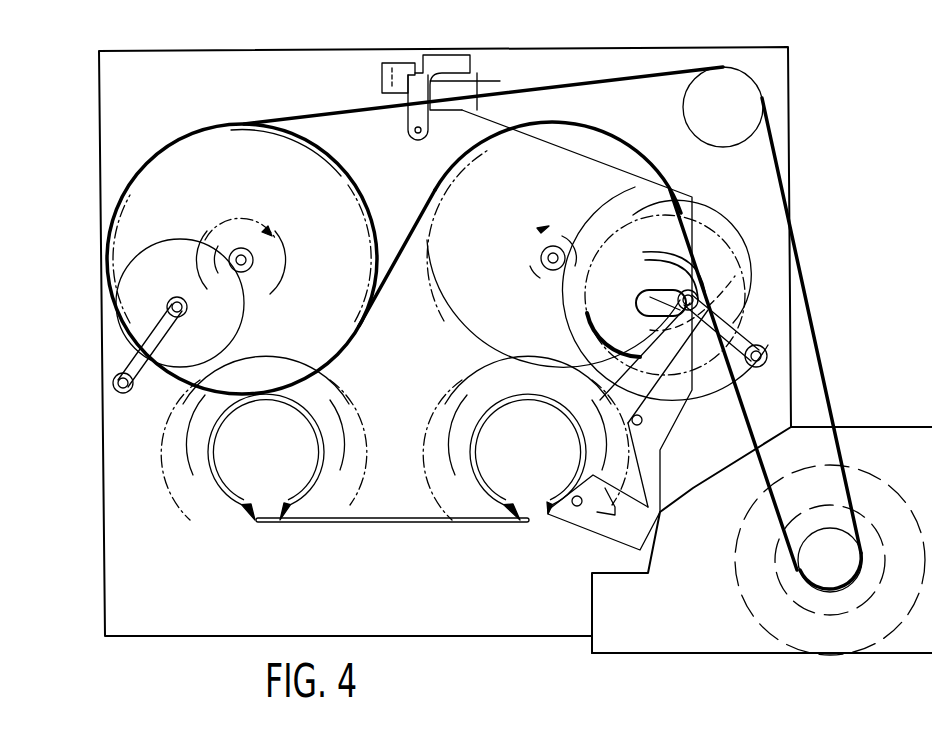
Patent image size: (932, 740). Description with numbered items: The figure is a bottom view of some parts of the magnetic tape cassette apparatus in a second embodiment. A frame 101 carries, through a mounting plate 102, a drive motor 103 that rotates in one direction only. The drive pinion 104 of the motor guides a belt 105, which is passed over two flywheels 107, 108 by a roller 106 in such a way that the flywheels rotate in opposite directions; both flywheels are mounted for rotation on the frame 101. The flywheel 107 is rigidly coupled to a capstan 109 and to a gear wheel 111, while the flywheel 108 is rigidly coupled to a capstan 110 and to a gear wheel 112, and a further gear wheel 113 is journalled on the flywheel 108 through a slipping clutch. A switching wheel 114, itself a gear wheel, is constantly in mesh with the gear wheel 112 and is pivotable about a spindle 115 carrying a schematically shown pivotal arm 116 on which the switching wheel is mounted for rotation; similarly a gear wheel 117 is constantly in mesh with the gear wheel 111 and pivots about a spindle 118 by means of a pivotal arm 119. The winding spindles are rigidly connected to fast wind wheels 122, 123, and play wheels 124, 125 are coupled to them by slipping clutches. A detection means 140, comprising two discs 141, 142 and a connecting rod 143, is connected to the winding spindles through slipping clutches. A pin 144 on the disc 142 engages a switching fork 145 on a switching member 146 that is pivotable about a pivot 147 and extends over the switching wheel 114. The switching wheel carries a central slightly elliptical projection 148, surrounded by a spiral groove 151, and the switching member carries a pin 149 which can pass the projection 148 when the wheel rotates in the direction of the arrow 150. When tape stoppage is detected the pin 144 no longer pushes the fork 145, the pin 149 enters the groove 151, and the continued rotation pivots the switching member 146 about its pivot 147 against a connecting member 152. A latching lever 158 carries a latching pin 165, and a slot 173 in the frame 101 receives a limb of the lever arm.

The frame 101 is at (420, 626).
The mounting plate 102 is at (627, 654).
The drive motor 103 is at (812, 661).
The drive pinion 104 is at (848, 576).
The belt 105 is at (833, 396).
The roller 106 is at (758, 100).
The flywheel 107 is at (109, 232).
The flywheel 108 is at (620, 144).
The capstan 109 is at (256, 258).
The capstan 110 is at (546, 258).
The gear wheel 111 is at (236, 252).
The gear wheel 112 is at (540, 250).
The gear wheel 113 is at (232, 226).
The switching wheel 114 is at (738, 294).
The spindle 115 is at (763, 368).
The pivotal arm 116 is at (742, 347).
The gear wheel 117 is at (112, 327).
The spindle 118 is at (116, 389).
The pivotal arm 119 is at (112, 367).
The fast wind wheel 122 is at (212, 441).
The fast wind wheel 123 is at (458, 433).
The play wheel 124 is at (185, 481).
The play wheel 125 is at (452, 497).
The detection means 140 is at (348, 534).
The disc 141 is at (246, 488).
The disc 142 is at (540, 523).
The connecting rod 143 is at (330, 527).
The pin 144 is at (577, 497).
The switching fork 145 is at (612, 537).
The switching member 146 is at (674, 406).
The pivot 147 is at (644, 424).
The projection 148 is at (660, 278).
The pin 149 is at (737, 282).
The arrow 150 is at (626, 236).
The spiral groove 151 is at (647, 350).
The connecting member 152 is at (660, 80).
The latching lever 158 is at (456, 58).
The latching pin 165 is at (417, 138).
The slot 173 is at (383, 63).